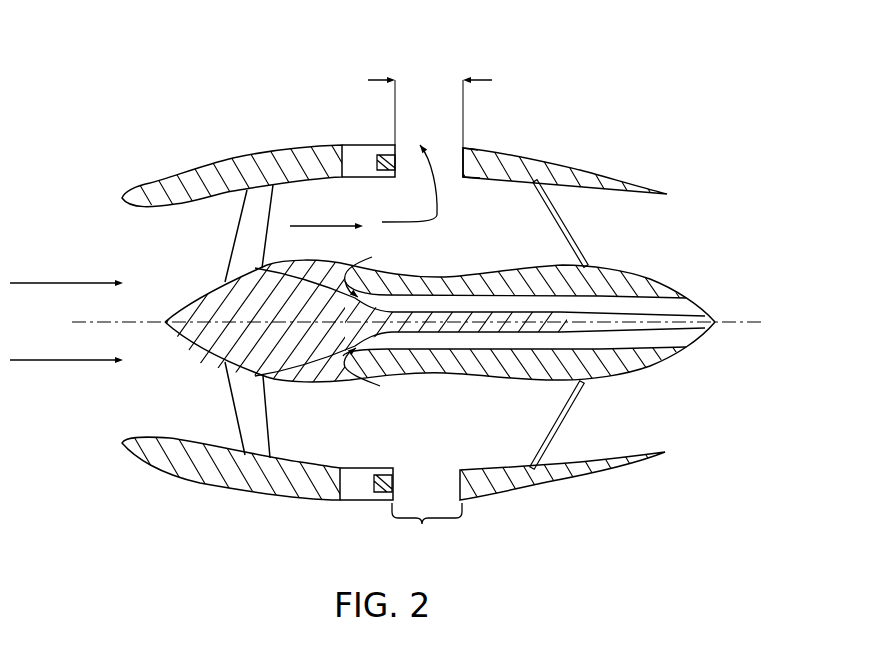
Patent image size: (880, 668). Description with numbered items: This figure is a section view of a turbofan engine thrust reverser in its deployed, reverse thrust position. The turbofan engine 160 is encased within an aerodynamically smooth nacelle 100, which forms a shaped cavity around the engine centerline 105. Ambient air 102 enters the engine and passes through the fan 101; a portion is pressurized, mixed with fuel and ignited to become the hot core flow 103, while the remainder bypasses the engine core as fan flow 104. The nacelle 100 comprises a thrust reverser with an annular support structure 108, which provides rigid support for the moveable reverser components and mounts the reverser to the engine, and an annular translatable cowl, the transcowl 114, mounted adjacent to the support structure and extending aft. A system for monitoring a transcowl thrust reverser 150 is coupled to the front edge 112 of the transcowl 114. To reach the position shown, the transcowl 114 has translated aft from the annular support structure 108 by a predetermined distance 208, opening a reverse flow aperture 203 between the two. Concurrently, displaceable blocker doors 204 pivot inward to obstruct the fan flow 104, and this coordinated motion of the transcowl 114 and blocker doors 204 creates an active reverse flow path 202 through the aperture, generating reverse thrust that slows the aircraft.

The nacelle 100 is at (520, 92).
The fan 101 is at (255, 190).
The ambient air 102 is at (75, 283).
The core flow 103 is at (373, 322).
The fan flow 104 is at (340, 223).
The engine centerline 105 is at (748, 322).
The annular support structure 108 is at (362, 145).
The front edge 112 is at (462, 157).
The transcowl 114 is at (525, 157).
The system for monitoring a transcowl thrust reverser 150 is at (385, 172).
The turbofan engine 160 is at (282, 313).
The active reverse flow path 202 is at (437, 215).
The reverse flow aperture 203 is at (427, 531).
The displaceable blocker doors 204 is at (580, 240).
The predetermined distance 208 is at (430, 110).